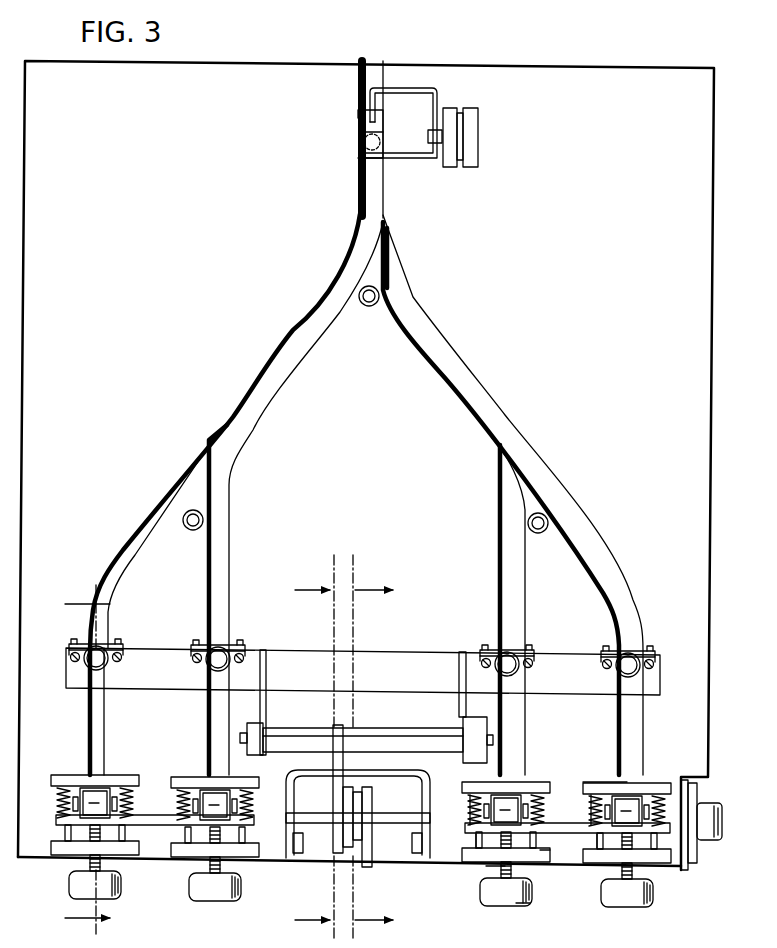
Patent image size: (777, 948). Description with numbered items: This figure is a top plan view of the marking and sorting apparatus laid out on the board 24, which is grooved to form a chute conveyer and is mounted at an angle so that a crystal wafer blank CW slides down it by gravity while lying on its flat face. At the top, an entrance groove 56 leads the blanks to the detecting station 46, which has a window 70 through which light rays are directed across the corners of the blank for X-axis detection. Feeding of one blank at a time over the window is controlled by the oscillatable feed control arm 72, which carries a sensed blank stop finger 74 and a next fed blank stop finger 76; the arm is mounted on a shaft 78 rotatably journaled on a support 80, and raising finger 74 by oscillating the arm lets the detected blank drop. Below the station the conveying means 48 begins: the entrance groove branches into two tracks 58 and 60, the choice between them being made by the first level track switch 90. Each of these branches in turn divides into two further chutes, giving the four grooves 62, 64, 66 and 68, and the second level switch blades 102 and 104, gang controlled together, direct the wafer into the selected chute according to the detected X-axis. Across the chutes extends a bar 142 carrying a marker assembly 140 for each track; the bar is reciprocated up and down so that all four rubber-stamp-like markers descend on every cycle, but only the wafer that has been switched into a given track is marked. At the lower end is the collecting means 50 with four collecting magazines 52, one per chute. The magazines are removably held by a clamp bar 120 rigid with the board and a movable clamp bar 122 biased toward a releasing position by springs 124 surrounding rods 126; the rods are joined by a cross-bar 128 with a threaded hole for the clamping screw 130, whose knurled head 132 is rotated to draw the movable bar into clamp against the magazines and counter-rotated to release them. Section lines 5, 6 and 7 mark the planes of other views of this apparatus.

The board 24 is at (600, 222).
The detecting station 46 is at (352, 140).
The conveying means 48 is at (572, 430).
The collecting means 50 is at (660, 748).
The collecting magazine 52 is at (97, 790).
The entrance groove 56 is at (358, 90).
The branch 58 is at (290, 337).
The branch 60 is at (468, 366).
The branch 62 is at (114, 627).
The branch 64 is at (233, 604).
The branch 66 is at (526, 606).
The branch 68 is at (640, 622).
The window 70 is at (382, 140).
The oscillatable feed control arm 72 is at (440, 100).
The sensed blank stop finger 74 is at (372, 158).
The next fed blank stop finger 76 is at (378, 108).
The shaft 78 is at (430, 145).
The support 80 is at (478, 160).
The first level track switch 90 is at (383, 273).
The second level switch blade 102 is at (203, 490).
The second level switch blade 104 is at (522, 472).
The clamp bar 120 is at (548, 830).
The movable clamp bar 122 is at (602, 786).
The spring 124 is at (468, 810).
The rod 126 is at (478, 838).
The cross-bar 128 is at (543, 858).
The clamping screw 130 is at (487, 874).
The knurled head 132 is at (523, 904).
The marker assembly 140 is at (470, 656).
The bar 142 is at (418, 660).
The crystal wafer blank CW is at (362, 140).
The section line 5 is at (87, 760).
The section line 6 is at (314, 750).
The section line 7 is at (373, 750).